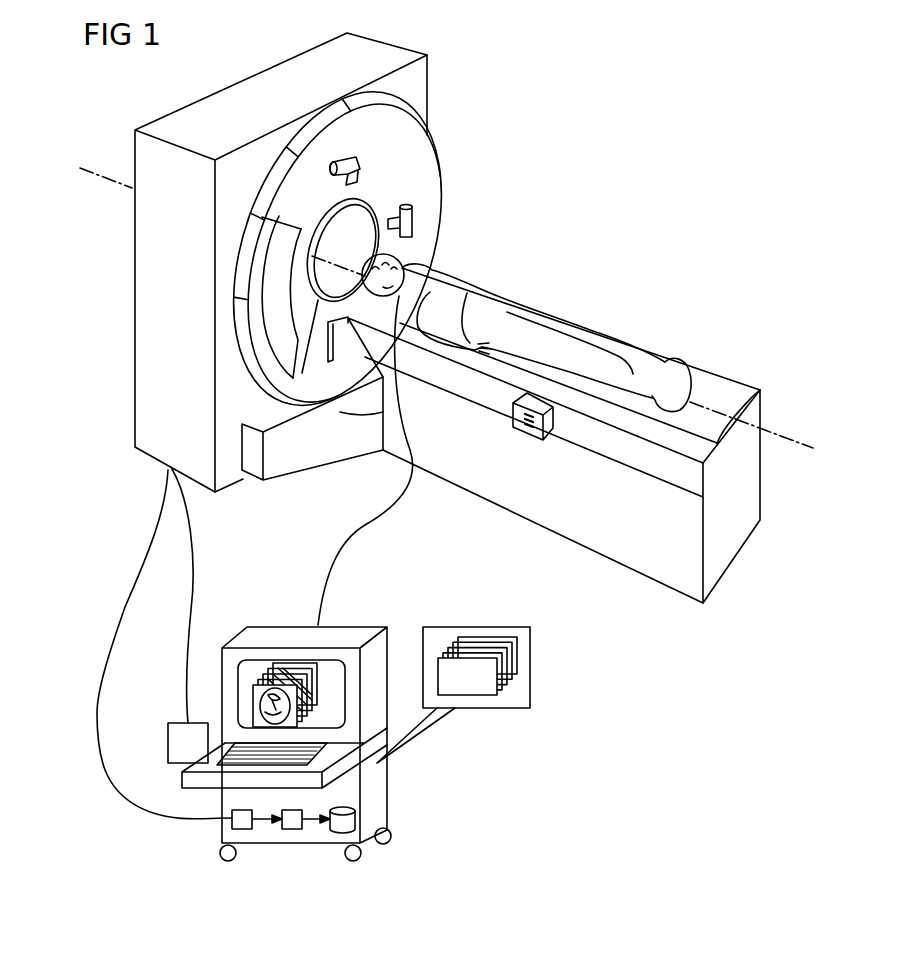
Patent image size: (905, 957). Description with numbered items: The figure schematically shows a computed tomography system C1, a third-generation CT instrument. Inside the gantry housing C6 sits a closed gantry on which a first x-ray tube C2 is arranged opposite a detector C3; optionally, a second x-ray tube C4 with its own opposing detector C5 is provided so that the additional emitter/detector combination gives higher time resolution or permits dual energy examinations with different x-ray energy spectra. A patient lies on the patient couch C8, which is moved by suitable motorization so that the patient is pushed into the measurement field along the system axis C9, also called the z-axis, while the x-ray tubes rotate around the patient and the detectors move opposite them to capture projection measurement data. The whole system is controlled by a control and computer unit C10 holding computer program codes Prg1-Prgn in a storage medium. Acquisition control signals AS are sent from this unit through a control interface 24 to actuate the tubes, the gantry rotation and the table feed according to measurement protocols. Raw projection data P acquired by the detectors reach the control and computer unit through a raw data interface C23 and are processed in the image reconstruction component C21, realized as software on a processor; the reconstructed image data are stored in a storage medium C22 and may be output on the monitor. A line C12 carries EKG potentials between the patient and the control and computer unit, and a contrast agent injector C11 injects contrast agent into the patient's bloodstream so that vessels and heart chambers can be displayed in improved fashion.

The computed tomography system C1 is at (608, 164).
The first x-ray tube C2 is at (412, 222).
The detector C3 is at (293, 349).
The second x-ray tube C4 is at (363, 170).
The detector C5 is at (338, 350).
The gantry housing C6 is at (162, 458).
The patient couch C8 is at (642, 566).
The system axis C9 is at (777, 430).
The control and computer unit C10 is at (380, 792).
The contrast agent injector C11 is at (533, 438).
The line C12 is at (350, 537).
The image reconstruction component C21 is at (292, 829).
The storage medium C22 is at (343, 833).
The raw data interface C23 is at (240, 829).
The projection measurement data P is at (143, 552).
The acquisition control signals AS is at (195, 580).
The control interface 24 is at (168, 745).
The computer program codes Prg1-Prgn is at (463, 696).